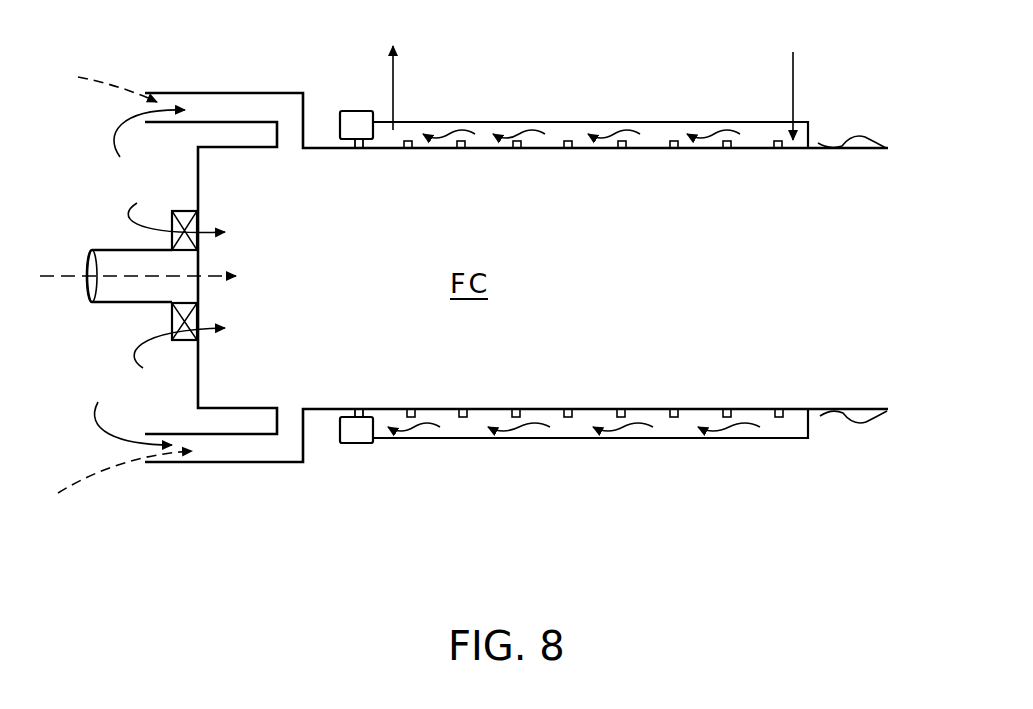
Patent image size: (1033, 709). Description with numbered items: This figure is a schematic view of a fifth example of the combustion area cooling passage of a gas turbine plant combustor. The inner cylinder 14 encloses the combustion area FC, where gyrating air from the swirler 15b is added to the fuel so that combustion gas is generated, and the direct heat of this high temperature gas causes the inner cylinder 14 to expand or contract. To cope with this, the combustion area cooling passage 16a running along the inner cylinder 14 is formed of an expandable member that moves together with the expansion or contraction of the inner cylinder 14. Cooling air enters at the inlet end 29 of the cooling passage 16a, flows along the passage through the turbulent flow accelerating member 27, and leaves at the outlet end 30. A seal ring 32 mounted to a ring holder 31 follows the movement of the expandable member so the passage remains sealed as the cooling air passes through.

The inner cylinder 14 is at (317, 143).
The swirler 15b is at (180, 210).
The combustion area cooling passage 16a is at (607, 103).
The turbulent flow accelerating member 27 is at (519, 152).
The inlet end 29 is at (798, 118).
The outlet end 30 is at (395, 120).
The ring holder 31 is at (351, 111).
The seal ring 32 is at (359, 150).